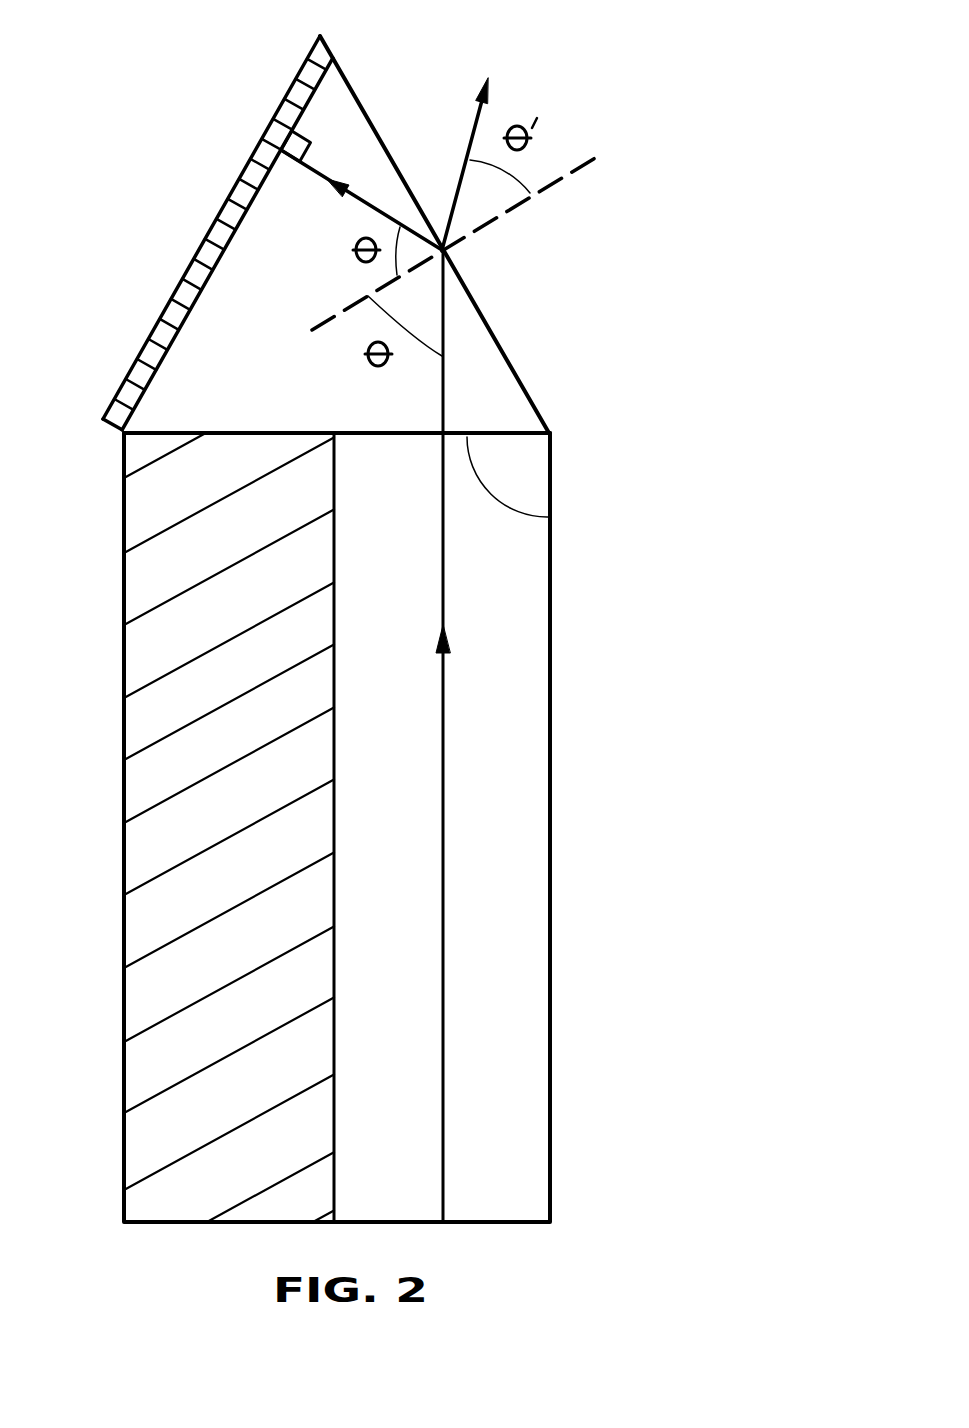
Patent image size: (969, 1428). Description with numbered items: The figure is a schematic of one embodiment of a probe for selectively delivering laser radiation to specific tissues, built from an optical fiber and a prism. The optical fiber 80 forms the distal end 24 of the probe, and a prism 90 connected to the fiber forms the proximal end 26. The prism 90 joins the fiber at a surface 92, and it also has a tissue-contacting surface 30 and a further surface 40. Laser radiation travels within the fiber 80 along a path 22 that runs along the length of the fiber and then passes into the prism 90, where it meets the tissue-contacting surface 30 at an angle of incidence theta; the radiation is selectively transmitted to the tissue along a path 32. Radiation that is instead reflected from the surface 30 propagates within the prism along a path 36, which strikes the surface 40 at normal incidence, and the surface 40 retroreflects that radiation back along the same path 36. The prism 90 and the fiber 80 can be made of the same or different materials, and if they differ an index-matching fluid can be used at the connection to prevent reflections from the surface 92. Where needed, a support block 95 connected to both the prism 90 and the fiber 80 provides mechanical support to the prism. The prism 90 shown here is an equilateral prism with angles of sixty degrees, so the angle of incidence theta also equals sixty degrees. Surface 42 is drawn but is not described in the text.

The path 22 is at (446, 777).
The distal end 24 is at (415, 1200).
The proximal end 26 is at (287, 409).
The tissue-contacting surface 30 is at (480, 310).
The path 32 is at (467, 147).
The path 36 is at (308, 173).
The surface 40 is at (238, 185).
The reflecting surface 42 is at (158, 308).
The optical fiber 80 is at (552, 1045).
The prism 90 is at (502, 398).
The surface 92 is at (548, 516).
The support block 95 is at (148, 752).